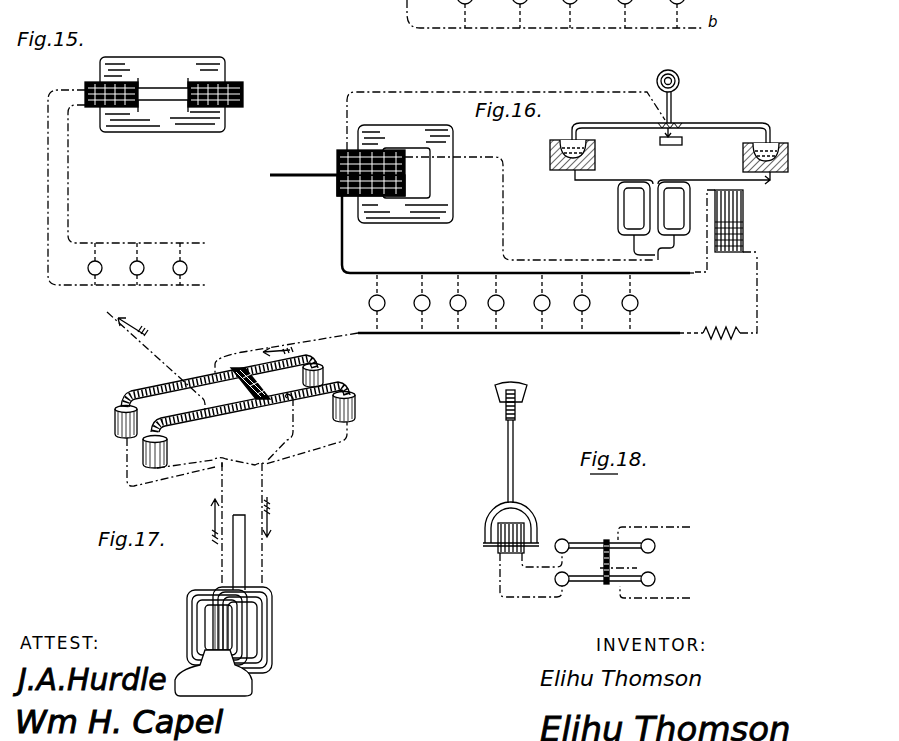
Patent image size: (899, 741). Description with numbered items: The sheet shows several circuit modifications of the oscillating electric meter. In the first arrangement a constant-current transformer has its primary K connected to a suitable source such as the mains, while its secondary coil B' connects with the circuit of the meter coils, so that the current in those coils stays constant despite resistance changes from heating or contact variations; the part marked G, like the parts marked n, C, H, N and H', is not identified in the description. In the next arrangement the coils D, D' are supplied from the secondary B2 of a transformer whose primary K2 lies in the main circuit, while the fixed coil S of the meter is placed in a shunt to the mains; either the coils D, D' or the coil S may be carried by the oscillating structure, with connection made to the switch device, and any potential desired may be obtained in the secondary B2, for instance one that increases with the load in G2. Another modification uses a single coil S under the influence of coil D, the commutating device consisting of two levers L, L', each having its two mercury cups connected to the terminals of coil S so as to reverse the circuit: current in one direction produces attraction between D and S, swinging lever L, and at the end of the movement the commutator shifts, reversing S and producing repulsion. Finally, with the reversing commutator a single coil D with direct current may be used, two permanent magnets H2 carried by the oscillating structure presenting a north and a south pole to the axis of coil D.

In FIG. 15, the primary K is at (85, 97).
In FIG. 15, the secondary coil B' is at (226, 94).
In FIG. 15, the laminated core G is at (162, 102).
In FIG. 16, the secondary B2 is at (337, 160).
In FIG. 16, the primary K2 is at (337, 188).
In FIG. 16, the lever L' is at (671, 108).
In FIG. 17, the lever L' is at (249, 423).
In FIG. 18, the lever L' is at (622, 539).
In FIG. 16, the coil D is at (624, 218).
In FIG. 17, the coil D is at (206, 627).
In FIG. 16, the coil D' is at (677, 221).
In FIG. 16, the coil S is at (728, 231).
In FIG. 17, the coil S is at (248, 630).
In FIG. 18, the coil S is at (498, 536).
In FIG. 16, the load G2 is at (516, 303).
In FIG. 16, the resistance n is at (718, 297).
In FIG. 17, the lever L is at (219, 472).
In FIG. 18, the lever L is at (622, 584).
In FIG. 18, the cap C is at (519, 392).
In FIG. 18, the adjusting nut H is at (524, 406).
In FIG. 18, the yoke N is at (525, 531).
In FIG. 18, the contact H' is at (513, 573).
In FIG. 18, the permanent magnets H2 is at (527, 550).